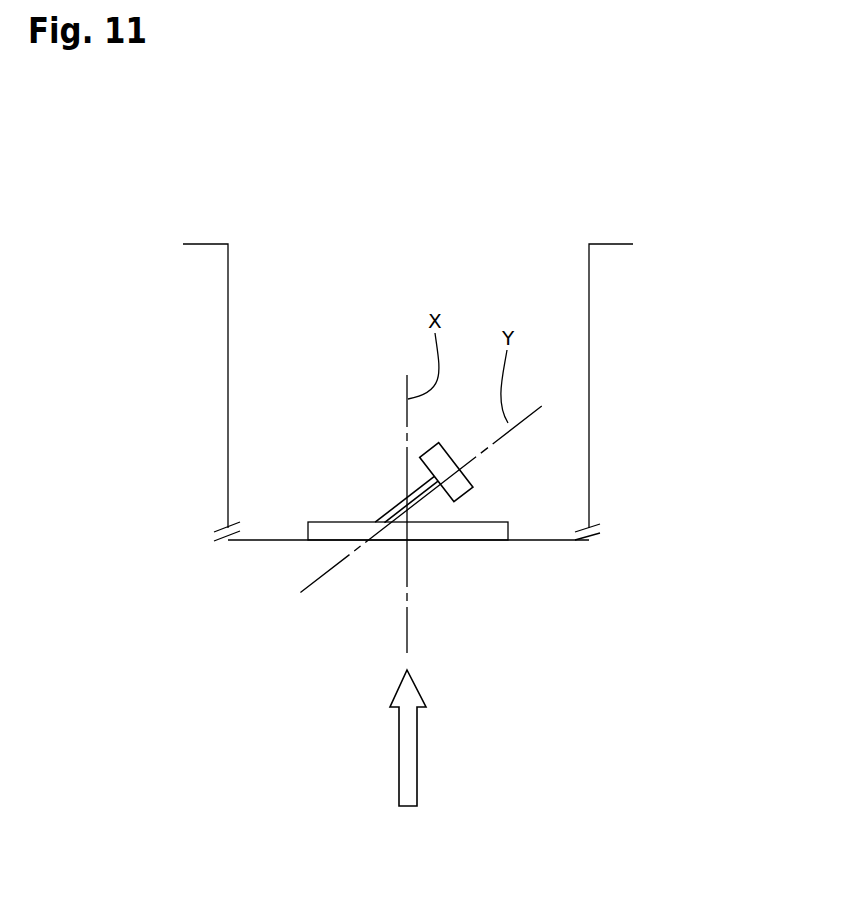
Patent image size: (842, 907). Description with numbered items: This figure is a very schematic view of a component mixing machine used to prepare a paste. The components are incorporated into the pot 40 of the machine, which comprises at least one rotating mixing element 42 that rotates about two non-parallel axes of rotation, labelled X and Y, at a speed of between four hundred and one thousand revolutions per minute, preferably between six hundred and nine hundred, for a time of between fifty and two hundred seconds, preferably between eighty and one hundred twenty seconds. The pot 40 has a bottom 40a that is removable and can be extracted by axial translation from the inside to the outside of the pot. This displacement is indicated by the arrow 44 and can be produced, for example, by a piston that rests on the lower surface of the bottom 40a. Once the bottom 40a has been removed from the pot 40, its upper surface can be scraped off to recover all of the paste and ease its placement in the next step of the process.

The pot 40 is at (600, 554).
The bottom 40a is at (262, 541).
The rotating mixing element 42 is at (365, 496).
The arrow 44 is at (405, 742).